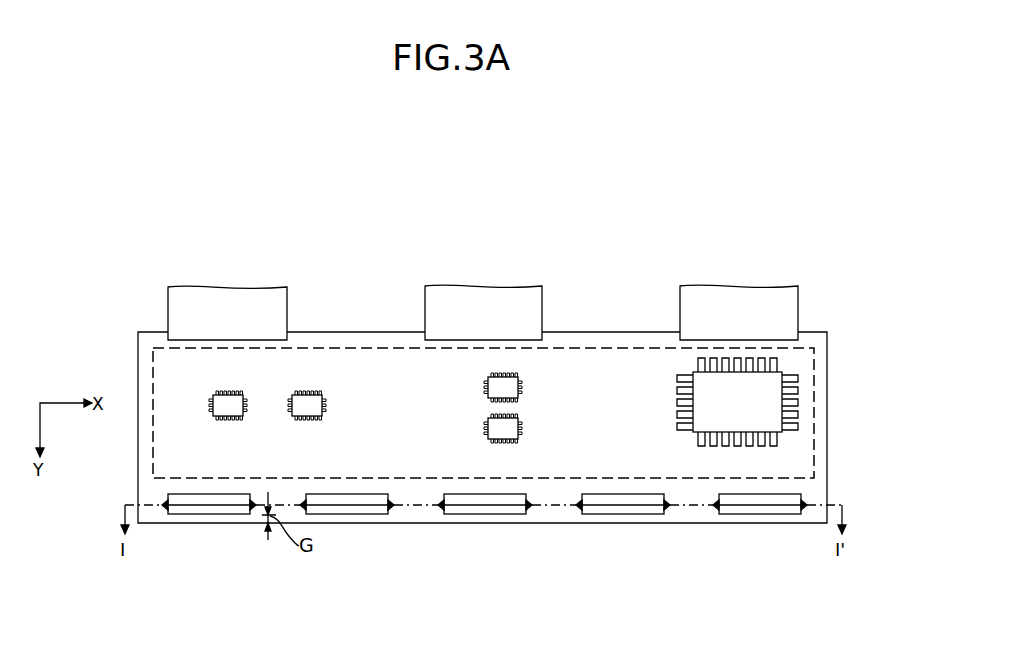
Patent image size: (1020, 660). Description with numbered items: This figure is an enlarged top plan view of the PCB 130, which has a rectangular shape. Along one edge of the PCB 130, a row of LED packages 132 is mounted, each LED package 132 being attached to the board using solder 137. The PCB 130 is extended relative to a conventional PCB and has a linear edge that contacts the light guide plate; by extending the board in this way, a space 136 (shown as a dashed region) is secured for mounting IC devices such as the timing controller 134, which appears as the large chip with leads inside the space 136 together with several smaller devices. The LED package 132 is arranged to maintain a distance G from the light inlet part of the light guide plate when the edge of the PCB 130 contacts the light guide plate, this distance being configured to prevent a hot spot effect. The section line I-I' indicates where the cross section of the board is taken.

The PCB 130 is at (827, 460).
The LED package 132 is at (622, 515).
The timing controller 134 is at (777, 407).
The space 136 is at (814, 362).
The solder 137 is at (579, 506).